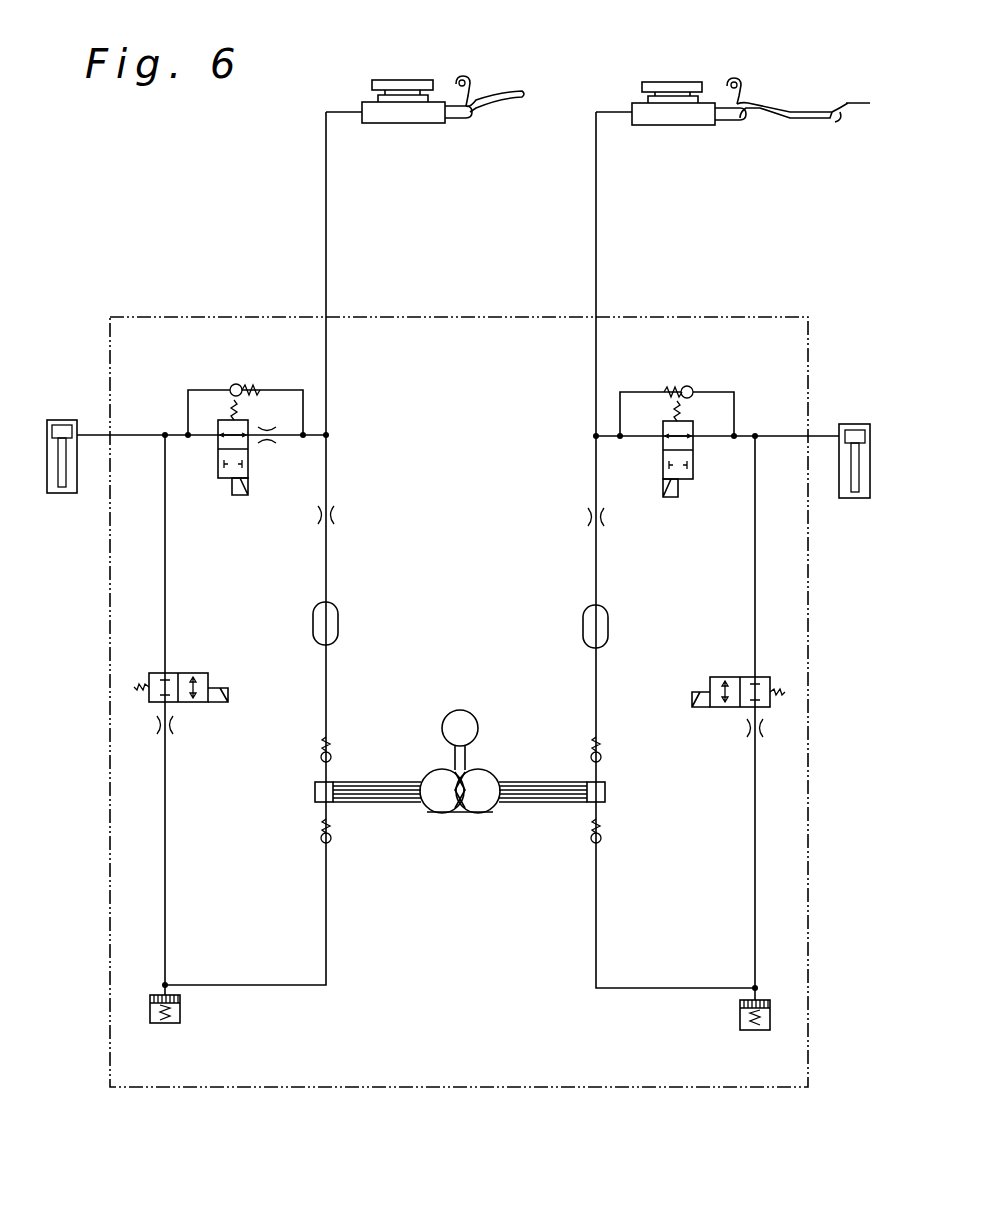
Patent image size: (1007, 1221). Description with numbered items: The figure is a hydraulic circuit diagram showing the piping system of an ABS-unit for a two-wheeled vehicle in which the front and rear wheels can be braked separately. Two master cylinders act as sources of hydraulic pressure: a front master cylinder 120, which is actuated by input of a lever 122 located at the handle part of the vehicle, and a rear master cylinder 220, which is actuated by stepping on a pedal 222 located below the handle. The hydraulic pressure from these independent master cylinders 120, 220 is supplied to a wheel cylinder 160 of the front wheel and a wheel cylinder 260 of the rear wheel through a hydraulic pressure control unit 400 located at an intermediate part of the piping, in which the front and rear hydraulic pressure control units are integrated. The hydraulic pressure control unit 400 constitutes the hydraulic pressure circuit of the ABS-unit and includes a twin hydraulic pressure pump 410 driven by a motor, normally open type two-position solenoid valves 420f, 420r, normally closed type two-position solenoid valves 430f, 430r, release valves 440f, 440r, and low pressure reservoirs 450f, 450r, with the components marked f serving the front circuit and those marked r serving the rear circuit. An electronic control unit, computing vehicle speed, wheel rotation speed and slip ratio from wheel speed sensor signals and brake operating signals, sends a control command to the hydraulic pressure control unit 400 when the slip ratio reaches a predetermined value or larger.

The master cylinder for front 120 is at (400, 125).
The lever 122 is at (508, 100).
The master cylinder for rear 220 is at (675, 127).
The pedal 222 is at (830, 116).
The hydraulic pressure control unit 400 is at (482, 316).
The twin hydraulic pressure pump 410 is at (482, 768).
The wheel cylinder 160 is at (62, 493).
The wheel cylinder 260 is at (855, 498).
The release valve 440f is at (240, 384).
The release valve 440r is at (684, 386).
The normally open type two-position solenoid valve 420f is at (222, 482).
The normally open type two-position solenoid valve 420r is at (686, 483).
The normally closed type two-position solenoid valve 430f is at (186, 702).
The normally closed type two-position solenoid valve 430r is at (730, 707).
The low pressure reservoir 450f is at (180, 1010).
The low pressure reservoir 450r is at (740, 1012).